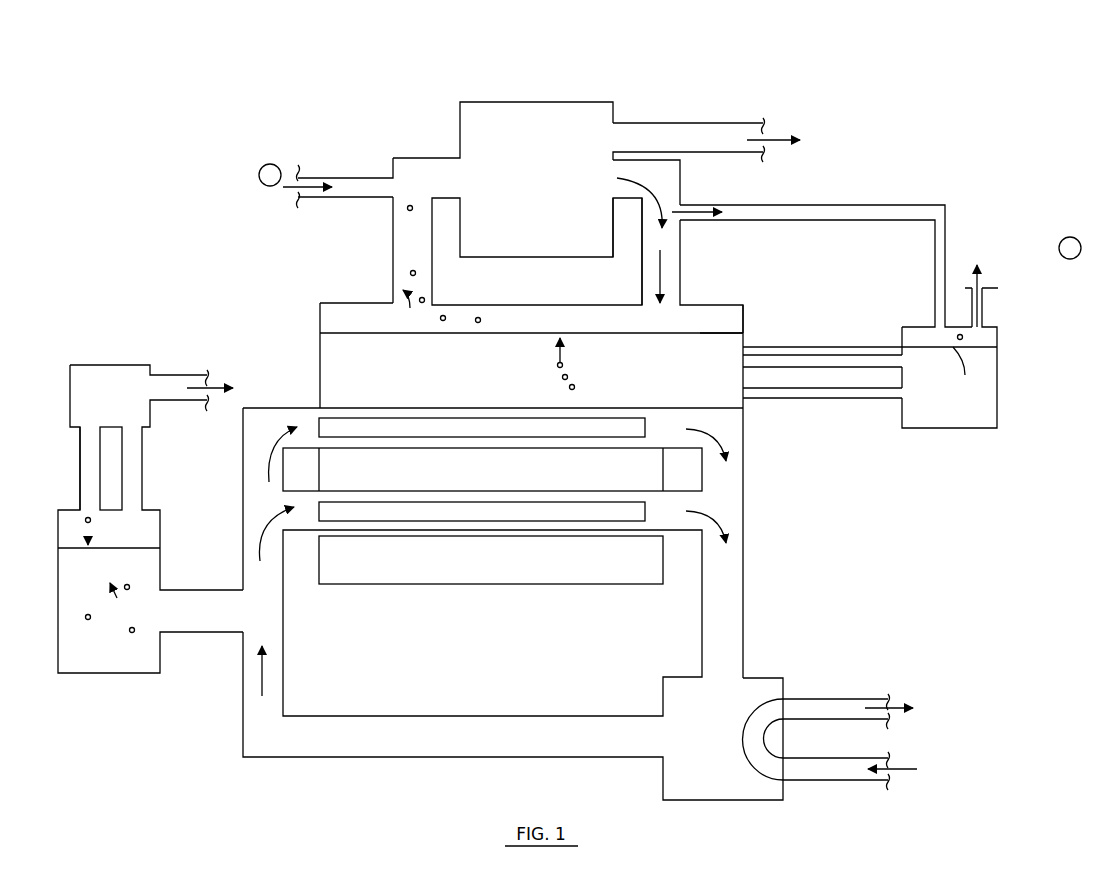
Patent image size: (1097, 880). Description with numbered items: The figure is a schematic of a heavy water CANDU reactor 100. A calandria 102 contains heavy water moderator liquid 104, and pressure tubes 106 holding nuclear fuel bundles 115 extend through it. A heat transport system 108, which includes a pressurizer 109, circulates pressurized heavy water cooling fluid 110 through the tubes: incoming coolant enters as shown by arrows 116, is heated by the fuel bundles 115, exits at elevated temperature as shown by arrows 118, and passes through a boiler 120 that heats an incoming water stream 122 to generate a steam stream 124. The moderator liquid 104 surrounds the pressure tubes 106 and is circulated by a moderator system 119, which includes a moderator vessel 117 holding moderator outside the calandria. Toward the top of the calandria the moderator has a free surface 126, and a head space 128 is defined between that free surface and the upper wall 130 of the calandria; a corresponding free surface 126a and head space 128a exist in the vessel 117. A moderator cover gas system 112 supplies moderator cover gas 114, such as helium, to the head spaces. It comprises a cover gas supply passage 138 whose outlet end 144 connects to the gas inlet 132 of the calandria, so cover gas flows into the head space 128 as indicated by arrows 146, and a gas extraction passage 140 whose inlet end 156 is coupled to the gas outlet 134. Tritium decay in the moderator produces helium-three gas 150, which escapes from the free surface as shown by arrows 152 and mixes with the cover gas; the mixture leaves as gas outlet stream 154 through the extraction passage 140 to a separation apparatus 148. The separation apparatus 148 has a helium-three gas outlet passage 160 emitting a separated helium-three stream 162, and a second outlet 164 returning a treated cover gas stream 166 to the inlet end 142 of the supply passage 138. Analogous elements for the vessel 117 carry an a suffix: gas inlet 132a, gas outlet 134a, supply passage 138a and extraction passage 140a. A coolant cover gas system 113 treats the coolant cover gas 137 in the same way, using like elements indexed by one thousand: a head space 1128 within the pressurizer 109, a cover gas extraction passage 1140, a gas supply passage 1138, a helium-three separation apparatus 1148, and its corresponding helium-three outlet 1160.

The CANDU reactor 100 is at (212, 92).
The calandria 102 is at (747, 343).
The heavy water moderator liquid 104 is at (337, 363).
The pressure tubes 106 is at (424, 454).
The heat transport system 108 is at (783, 605).
The pressurizer 109 is at (98, 673).
The cooling fluid 110 is at (724, 484).
The moderator cover gas system 112 is at (387, 122).
The coolant cover gas system 113 is at (60, 333).
The moderator cover gas 114 is at (716, 316).
The nuclear fuel bundles 115 is at (524, 430).
The arrows 116 is at (270, 517).
The moderator vessel 117 is at (897, 347).
The arrows 118 is at (720, 439).
The moderator system 119 is at (1012, 373).
The boiler 120 is at (690, 703).
The incoming water stream 122 is at (893, 773).
The steam stream 124 is at (877, 703).
The free surface 126 is at (464, 338).
The free surface 126a is at (955, 348).
The head space 128 is at (720, 318).
The head space 128a is at (990, 338).
The upper wall 130 is at (340, 303).
The gas inlet 132 is at (690, 317).
The gas inlet 132a is at (932, 325).
The gas outlet 134 is at (438, 303).
The gas outlet 134a is at (987, 325).
The coolant cover gas 137 is at (65, 522).
The cover gas supply passage 138 is at (643, 250).
The cover gas supply passage 138a is at (858, 205).
The gas extraction passage 140 is at (393, 212).
The gas extraction passage 140a is at (340, 177).
The inlet end 142 is at (690, 160).
The outlet end 144 is at (630, 295).
The arrows 146 is at (657, 300).
The separation apparatus 148 is at (537, 102).
The helium-three gas 150 is at (412, 240).
The arrows 152 is at (578, 340).
The gas outlet stream 154 is at (410, 308).
The inlet end 156 is at (387, 295).
The helium-three gas outlet passage 160 is at (682, 122).
The helium-three gas stream 162 is at (777, 135).
The second outlet 164 is at (628, 203).
The treated cover gas stream 166 is at (627, 180).
The head space 1128 is at (138, 532).
The gas supply passage 1138 is at (142, 452).
The cover gas extraction passage 1140 is at (80, 448).
The helium-three separation apparatus 1148 is at (118, 365).
The outlet 1160 is at (190, 373).